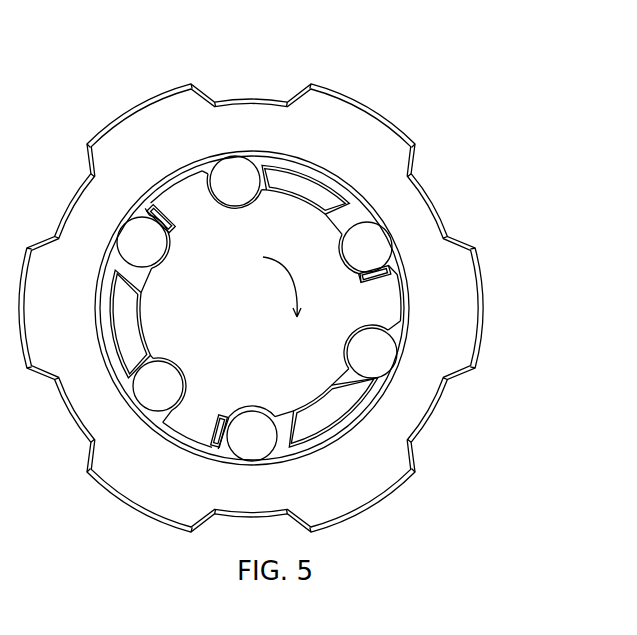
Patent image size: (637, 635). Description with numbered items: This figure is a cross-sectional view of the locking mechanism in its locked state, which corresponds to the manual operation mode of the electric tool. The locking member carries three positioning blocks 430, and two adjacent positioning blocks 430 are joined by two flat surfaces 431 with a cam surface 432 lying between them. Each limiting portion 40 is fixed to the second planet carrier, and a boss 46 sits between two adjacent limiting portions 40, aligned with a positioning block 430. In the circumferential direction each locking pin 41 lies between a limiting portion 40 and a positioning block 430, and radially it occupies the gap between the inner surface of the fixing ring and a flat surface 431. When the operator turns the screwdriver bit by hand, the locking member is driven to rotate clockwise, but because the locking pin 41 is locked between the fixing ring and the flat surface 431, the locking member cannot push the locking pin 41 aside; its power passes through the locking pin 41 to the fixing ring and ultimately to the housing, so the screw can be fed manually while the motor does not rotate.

The limiting portion 40 is at (278, 187).
The locking pin 41 is at (365, 252).
The boss 46 is at (157, 210).
The positioning block 430 is at (380, 303).
The flat surface 431 is at (340, 233).
The cam surface 432 is at (317, 213).